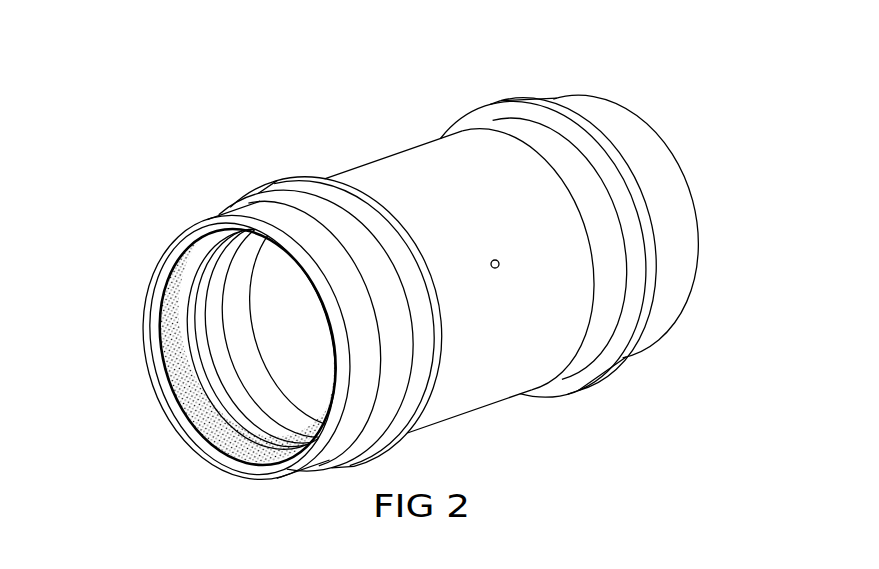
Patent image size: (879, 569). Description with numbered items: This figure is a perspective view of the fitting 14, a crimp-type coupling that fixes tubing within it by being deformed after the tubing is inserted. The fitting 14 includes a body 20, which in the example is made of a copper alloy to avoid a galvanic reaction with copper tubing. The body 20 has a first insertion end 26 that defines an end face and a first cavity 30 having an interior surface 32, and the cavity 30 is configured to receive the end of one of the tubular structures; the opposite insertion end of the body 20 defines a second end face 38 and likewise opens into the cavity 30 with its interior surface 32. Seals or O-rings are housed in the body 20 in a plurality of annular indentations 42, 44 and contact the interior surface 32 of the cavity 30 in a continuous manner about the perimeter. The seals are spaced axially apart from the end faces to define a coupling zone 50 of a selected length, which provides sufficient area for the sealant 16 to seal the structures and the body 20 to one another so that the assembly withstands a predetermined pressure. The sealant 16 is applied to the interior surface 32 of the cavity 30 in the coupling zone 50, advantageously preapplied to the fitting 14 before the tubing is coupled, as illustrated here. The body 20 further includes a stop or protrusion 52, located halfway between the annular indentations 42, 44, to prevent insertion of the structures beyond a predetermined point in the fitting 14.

The fitting 14 is at (354, 128).
The sealant 16 is at (216, 426).
The body 20 is at (480, 392).
The first insertion end 26 is at (599, 90).
The first cavity 30 is at (713, 194).
The interior surface 32 is at (270, 452).
The second end face 38 is at (151, 284).
The annular indentation 42 is at (505, 104).
The annular indentation 44 is at (393, 443).
The coupling zone 50 is at (214, 214).
The protrusion 52 is at (499, 267).